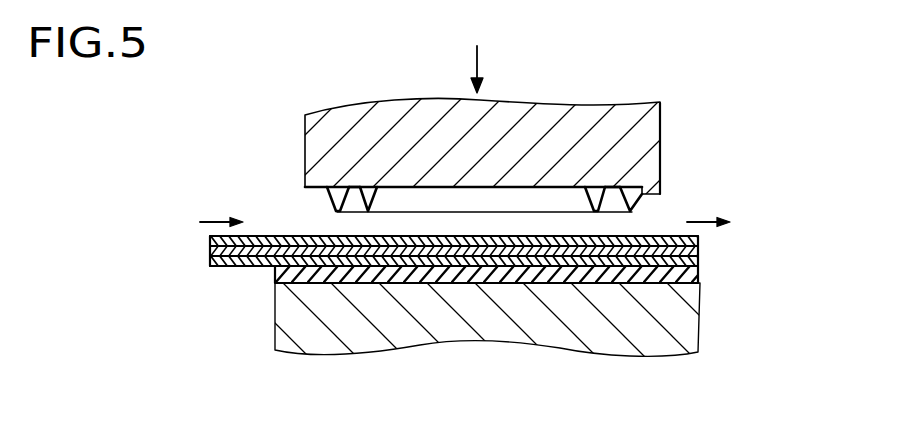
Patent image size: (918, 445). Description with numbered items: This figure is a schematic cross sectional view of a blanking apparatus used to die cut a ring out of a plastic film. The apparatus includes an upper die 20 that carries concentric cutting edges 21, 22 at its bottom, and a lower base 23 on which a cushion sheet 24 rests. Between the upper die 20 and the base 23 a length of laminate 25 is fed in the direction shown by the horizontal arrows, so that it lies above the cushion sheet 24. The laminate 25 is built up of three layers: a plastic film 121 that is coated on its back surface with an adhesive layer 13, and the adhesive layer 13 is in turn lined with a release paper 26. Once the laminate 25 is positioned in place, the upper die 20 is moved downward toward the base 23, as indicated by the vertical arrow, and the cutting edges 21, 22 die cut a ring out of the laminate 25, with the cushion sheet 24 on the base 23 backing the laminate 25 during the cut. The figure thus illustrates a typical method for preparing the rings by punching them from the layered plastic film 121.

The adhesive layer 13 is at (255, 235).
The plastic film 121 is at (290, 235).
The laminate 25 is at (192, 233).
The release paper 26 is at (232, 268).
The upper die 20 is at (648, 133).
The cutting edge 21 is at (598, 207).
The cutting edge 22 is at (642, 200).
The lower base 23 is at (683, 327).
The cushion sheet 24 is at (688, 274).